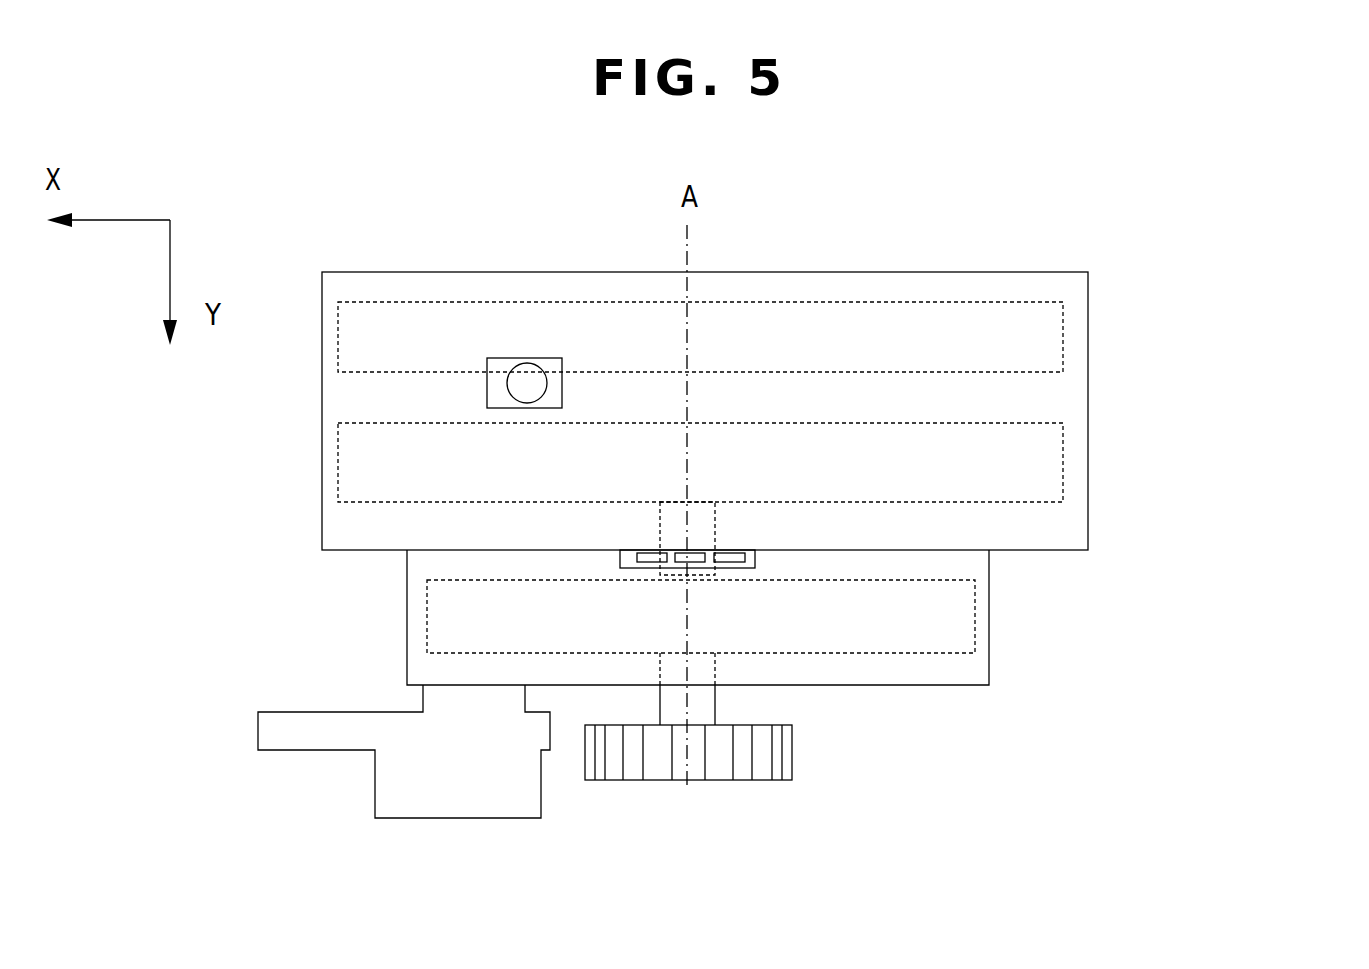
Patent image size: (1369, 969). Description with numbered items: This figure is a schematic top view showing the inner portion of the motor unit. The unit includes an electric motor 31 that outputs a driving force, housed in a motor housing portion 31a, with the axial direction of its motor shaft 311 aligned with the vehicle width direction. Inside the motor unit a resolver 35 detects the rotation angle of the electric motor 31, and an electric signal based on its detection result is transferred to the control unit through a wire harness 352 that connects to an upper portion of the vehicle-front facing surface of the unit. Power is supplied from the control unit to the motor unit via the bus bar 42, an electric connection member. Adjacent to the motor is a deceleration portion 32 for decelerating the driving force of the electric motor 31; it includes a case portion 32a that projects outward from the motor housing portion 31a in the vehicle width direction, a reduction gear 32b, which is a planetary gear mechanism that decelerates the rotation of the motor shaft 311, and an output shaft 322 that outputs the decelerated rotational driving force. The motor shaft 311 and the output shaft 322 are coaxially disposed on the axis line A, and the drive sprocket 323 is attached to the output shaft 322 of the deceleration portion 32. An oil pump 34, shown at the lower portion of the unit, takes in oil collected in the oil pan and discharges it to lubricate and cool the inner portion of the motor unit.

The electric motor 31 is at (841, 375).
The motor housing portion 31a is at (1088, 432).
The motor shaft 311 is at (716, 519).
The resolver 35 is at (1020, 302).
The wire harness 352 is at (547, 385).
The bus bar 42 is at (622, 557).
The deceleration portion 32 is at (812, 703).
The case portion 32a is at (989, 581).
The reduction gear 32b is at (975, 627).
The output shaft 322 is at (715, 708).
The drive sprocket 323 is at (755, 781).
The oil pump 34 is at (387, 823).